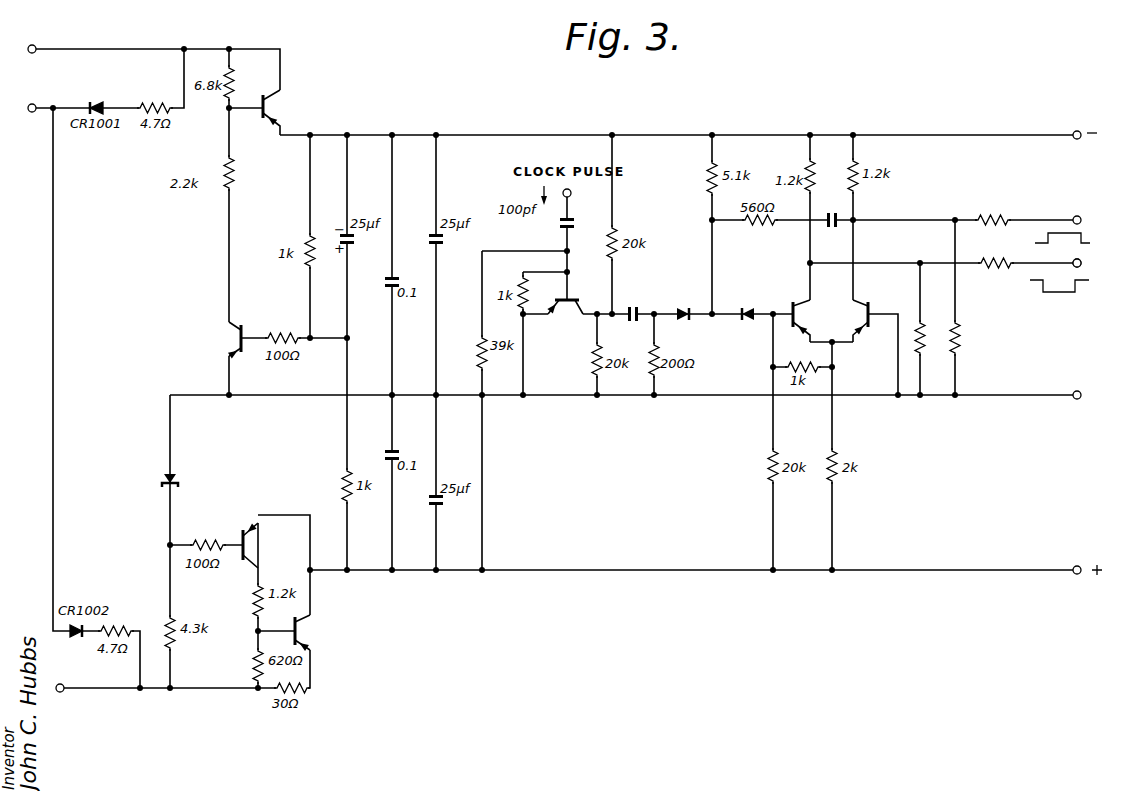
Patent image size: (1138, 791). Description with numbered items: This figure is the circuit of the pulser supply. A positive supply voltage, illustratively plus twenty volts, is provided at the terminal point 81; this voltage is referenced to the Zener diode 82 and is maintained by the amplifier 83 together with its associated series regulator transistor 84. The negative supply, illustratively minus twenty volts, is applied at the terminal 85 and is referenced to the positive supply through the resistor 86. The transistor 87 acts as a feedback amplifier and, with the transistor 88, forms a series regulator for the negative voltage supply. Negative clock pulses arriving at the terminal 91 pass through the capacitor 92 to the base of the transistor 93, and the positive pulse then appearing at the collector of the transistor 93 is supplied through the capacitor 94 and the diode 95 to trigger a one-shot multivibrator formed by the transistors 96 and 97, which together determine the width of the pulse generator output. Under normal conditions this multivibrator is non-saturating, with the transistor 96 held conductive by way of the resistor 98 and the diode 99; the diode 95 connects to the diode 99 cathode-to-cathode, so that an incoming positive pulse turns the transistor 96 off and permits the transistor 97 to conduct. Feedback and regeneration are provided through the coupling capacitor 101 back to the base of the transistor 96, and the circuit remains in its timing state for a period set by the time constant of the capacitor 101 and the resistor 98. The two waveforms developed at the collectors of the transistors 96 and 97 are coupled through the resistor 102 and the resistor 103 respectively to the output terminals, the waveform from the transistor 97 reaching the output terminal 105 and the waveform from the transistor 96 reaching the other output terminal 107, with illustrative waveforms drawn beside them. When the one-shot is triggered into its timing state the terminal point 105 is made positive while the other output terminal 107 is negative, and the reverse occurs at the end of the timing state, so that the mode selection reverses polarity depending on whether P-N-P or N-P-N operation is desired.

The terminal point 81 is at (1077, 564).
The Zener diode 82 is at (163, 480).
The amplifier 83 is at (247, 545).
The series regulator transistor 84 is at (300, 631).
The terminal 85 is at (1071, 142).
The resistor 86 is at (342, 490).
The transistor 87 is at (236, 339).
The transistor 88 is at (268, 104).
The terminal 91 is at (572, 191).
The capacitor 92 is at (561, 225).
The transistor 93 is at (567, 320).
The capacitor 94 is at (636, 306).
The diode 95 is at (683, 322).
The transistor 96 is at (797, 316).
The transistor 97 is at (872, 306).
The resistor 98 is at (708, 180).
The diode 99 is at (748, 322).
The coupling capacitor 101 is at (832, 211).
The resistor 102 is at (993, 270).
The resistor 103 is at (1005, 214).
The output terminal 105 is at (1077, 216).
The output terminal 107 is at (1082, 265).